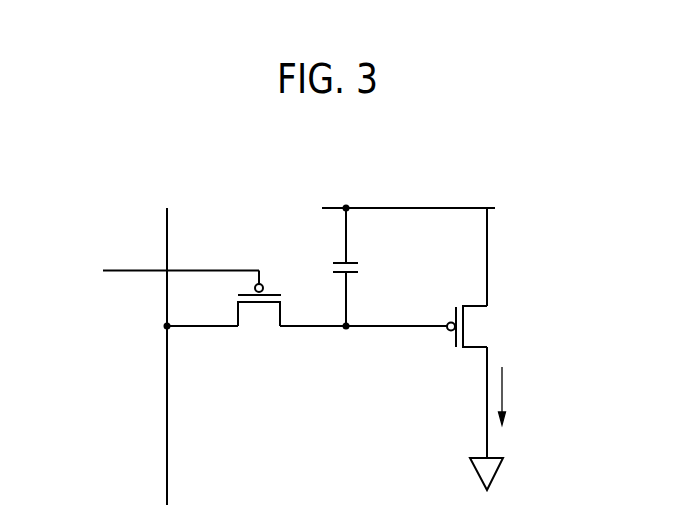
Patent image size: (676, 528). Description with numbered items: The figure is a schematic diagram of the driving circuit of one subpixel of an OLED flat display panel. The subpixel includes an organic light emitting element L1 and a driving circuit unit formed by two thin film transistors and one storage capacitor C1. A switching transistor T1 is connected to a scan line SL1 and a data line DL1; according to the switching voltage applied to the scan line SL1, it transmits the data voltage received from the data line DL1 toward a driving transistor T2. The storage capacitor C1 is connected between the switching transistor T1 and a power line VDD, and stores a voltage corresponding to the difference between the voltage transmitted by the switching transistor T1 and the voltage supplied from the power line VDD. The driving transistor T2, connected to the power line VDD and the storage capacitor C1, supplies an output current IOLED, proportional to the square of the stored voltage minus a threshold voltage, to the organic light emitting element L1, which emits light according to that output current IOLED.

The data line DL1 is at (164, 342).
The scan line SL1 is at (163, 272).
The switching transistor T1 is at (259, 314).
The driving transistor T2 is at (480, 326).
The storage capacitor C1 is at (360, 267).
The power line VDD is at (408, 244).
The output current IOLED is at (526, 396).
The organic light emitting element L1 is at (486, 488).